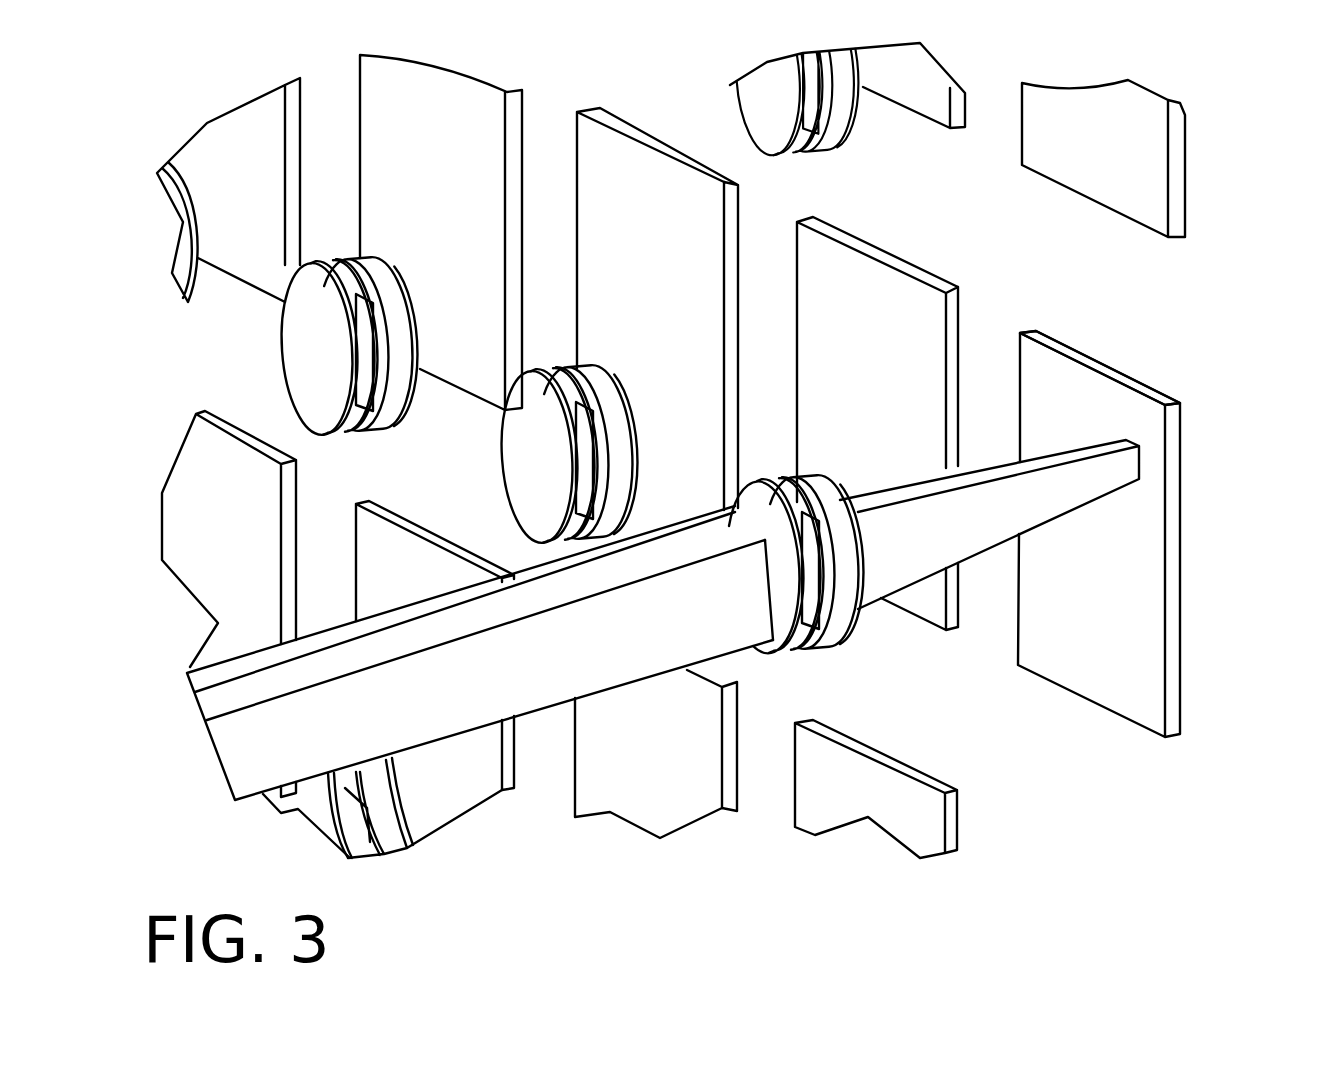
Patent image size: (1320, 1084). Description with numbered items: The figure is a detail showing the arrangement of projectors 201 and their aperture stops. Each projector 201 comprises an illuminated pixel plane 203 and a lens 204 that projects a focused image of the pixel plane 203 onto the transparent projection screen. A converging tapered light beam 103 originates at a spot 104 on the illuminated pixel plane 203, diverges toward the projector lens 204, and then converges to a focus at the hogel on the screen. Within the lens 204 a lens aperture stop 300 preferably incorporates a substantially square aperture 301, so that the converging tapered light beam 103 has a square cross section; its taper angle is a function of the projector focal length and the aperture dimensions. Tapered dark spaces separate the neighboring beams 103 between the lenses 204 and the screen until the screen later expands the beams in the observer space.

The converging tapered light beam 103 is at (198, 794).
The spot 104 is at (1216, 534).
The projector 201 is at (1178, 824).
The illuminated pixel plane 203 is at (1201, 326).
The lens 204 is at (527, 465).
The lens aperture stop 300 is at (573, 368).
The square aperture 301 is at (652, 332).